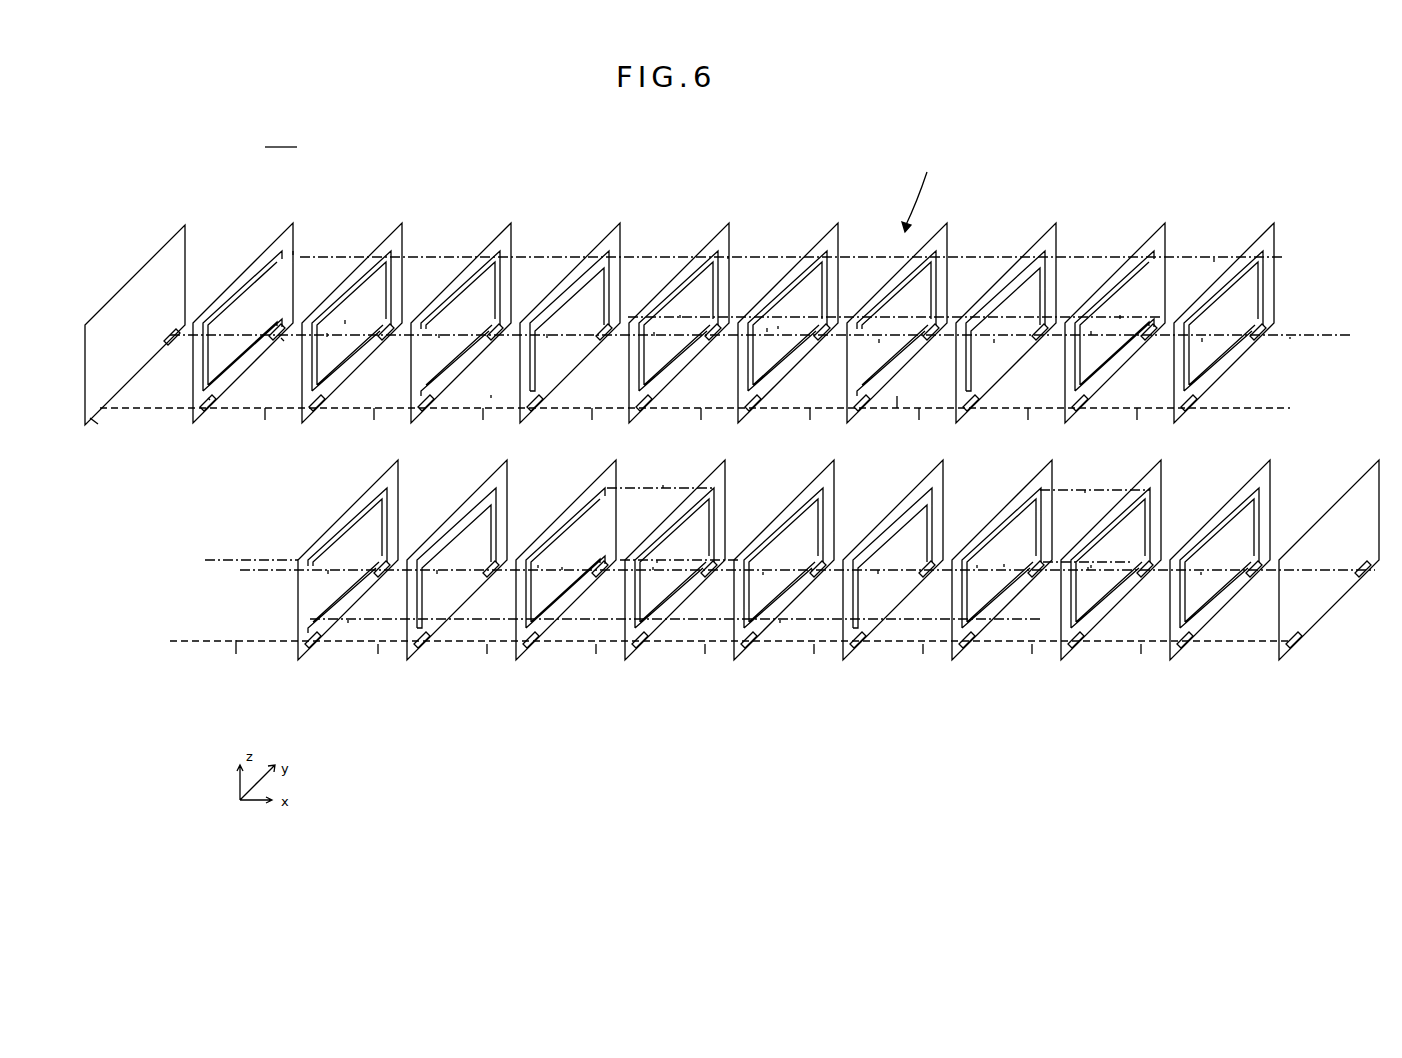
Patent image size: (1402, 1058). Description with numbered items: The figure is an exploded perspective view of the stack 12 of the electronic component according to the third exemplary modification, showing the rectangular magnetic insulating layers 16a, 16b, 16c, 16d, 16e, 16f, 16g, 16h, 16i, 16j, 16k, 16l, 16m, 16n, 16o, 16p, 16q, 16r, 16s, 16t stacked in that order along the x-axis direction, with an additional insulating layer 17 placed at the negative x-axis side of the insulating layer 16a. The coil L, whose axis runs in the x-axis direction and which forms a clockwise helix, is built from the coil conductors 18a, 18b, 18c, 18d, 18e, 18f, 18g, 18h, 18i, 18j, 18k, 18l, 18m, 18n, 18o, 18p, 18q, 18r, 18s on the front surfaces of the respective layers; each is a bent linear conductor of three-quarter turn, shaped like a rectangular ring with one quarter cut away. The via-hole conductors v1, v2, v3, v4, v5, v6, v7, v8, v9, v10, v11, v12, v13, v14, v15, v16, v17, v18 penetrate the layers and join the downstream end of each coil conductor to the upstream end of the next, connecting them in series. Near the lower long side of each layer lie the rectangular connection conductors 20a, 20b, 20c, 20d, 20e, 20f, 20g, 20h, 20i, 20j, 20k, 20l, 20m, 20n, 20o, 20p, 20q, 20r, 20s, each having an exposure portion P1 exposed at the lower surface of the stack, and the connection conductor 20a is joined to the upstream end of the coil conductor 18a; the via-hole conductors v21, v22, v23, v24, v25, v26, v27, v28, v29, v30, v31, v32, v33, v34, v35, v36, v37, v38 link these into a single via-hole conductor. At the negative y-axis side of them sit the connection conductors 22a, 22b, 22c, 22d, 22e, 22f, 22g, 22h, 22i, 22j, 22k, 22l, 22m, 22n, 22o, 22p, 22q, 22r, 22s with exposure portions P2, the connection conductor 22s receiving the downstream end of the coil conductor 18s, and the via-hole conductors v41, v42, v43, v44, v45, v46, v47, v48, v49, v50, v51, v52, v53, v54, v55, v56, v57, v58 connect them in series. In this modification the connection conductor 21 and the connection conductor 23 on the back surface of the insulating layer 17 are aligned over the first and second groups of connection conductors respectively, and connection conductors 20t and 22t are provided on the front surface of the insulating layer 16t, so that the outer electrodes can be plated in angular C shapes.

The stack 12 is at (281, 132).
The coil L is at (916, 189).
The insulating layer 17 is at (187, 224).
The connection conductor 21 is at (172, 348).
The connection conductor 23 is at (95, 412).
The exposure portion P1 is at (281, 338).
The exposure portion P2 is at (208, 398).
The insulating layer 16a is at (293, 223).
The insulating layer 16b is at (402, 223).
The insulating layer 16c is at (511, 223).
The insulating layer 16d is at (620, 223).
The insulating layer 16e is at (729, 223).
The insulating layer 16f is at (838, 223).
The insulating layer 16g is at (947, 223).
The insulating layer 16h is at (1056, 223).
The insulating layer 16i is at (1165, 223).
The insulating layer 16j is at (1274, 223).
The insulating layer 16k is at (298, 660).
The insulating layer 16l is at (407, 660).
The insulating layer 16m is at (516, 660).
The insulating layer 16n is at (625, 660).
The insulating layer 16o is at (734, 660).
The insulating layer 16p is at (843, 660).
The insulating layer 16q is at (952, 660).
The insulating layer 16r is at (1061, 660).
The insulating layer 16s is at (1170, 660).
The insulating layer 16t is at (1279, 660).
The coil conductor 18a is at (247, 280).
The coil conductor 18b is at (385, 292).
The coil conductor 18c is at (457, 286).
The coil conductor 18d is at (568, 292).
The coil conductor 18e is at (679, 286).
The coil conductor 18f is at (825, 277).
The coil conductor 18g is at (895, 286).
The coil conductor 18h is at (1005, 286).
The coil conductor 18i is at (1117, 292).
The coil conductor 18j is at (1262, 284).
The coil conductor 18k is at (352, 522).
The coil conductor 18l is at (461, 522).
The coil conductor 18m is at (570, 522).
The coil conductor 18n is at (681, 588).
The coil conductor 18o is at (788, 522).
The coil conductor 18p is at (897, 522).
The coil conductor 18q is at (1006, 522).
The coil conductor 18r is at (1117, 588).
The coil conductor 18s is at (1226, 588).
The connection conductor 20a is at (279, 344).
The connection conductor 20b is at (388, 344).
The connection conductor 20c is at (497, 344).
The connection conductor 20d is at (606, 344).
The connection conductor 20e is at (715, 344).
The connection conductor 20f is at (824, 344).
The connection conductor 20g is at (933, 344).
The connection conductor 20h is at (1042, 344).
The connection conductor 20i is at (1151, 344).
The connection conductor 20j is at (1260, 344).
The connection conductor 20k is at (384, 581).
The connection conductor 20l is at (493, 581).
The connection conductor 20m is at (602, 581).
The connection conductor 20n is at (711, 581).
The connection conductor 20o is at (820, 581).
The connection conductor 20p is at (929, 581).
The connection conductor 20q is at (1038, 581).
The connection conductor 20r is at (1147, 581).
The connection conductor 20s is at (1256, 581).
The connection conductor 20t is at (1365, 581).
The connection conductor 22a is at (203, 410).
The connection conductor 22b is at (312, 410).
The connection conductor 22c is at (421, 410).
The connection conductor 22d is at (530, 410).
The connection conductor 22e is at (639, 410).
The connection conductor 22f is at (748, 410).
The connection conductor 22g is at (857, 410).
The connection conductor 22h is at (966, 410).
The connection conductor 22i is at (1075, 410).
The connection conductor 22j is at (1184, 410).
The connection conductor 22k is at (316, 650).
The connection conductor 22l is at (425, 650).
The connection conductor 22m is at (534, 650).
The connection conductor 22n is at (643, 650).
The connection conductor 22o is at (752, 650).
The connection conductor 22p is at (861, 650).
The connection conductor 22q is at (970, 650).
The connection conductor 22r is at (1079, 650).
The connection conductor 22s is at (1188, 650).
The connection conductor 22t is at (1297, 650).
The via-hole conductor v1 is at (294, 252).
The via-hole conductor v2 is at (345, 322).
The via-hole conductor v3 is at (491, 398).
The via-hole conductor v4 is at (680, 315).
The via-hole conductor v5 is at (728, 256).
The via-hole conductor v6 is at (778, 326).
The via-hole conductor v7 is at (900, 419).
The via-hole conductor v8 is at (1120, 317).
The via-hole conductor v9 is at (1214, 262).
The via-hole conductor v10 is at (1290, 337).
The via-hole conductor v11 is at (348, 620).
The via-hole conductor v12 is at (538, 565).
The via-hole conductor v13 is at (663, 485).
The via-hole conductor v14 is at (657, 560).
The via-hole conductor v15 is at (780, 620).
The via-hole conductor v16 is at (977, 565).
The via-hole conductor v17 is at (1085, 490).
The via-hole conductor v18 is at (1091, 565).
The via-hole conductor v21 is at (327, 335).
The via-hole conductor v22 is at (439, 334).
The via-hole conductor v23 is at (547, 334).
The via-hole conductor v24 is at (654, 332).
The via-hole conductor v25 is at (767, 328).
The via-hole conductor v26 is at (879, 339).
The via-hole conductor v27 is at (994, 339).
The via-hole conductor v28 is at (1091, 333).
The via-hole conductor v29 is at (1202, 338).
The via-hole conductor v30 is at (328, 570).
The via-hole conductor v31 is at (437, 570).
The via-hole conductor v32 is at (562, 567).
The via-hole conductor v33 is at (653, 567).
The via-hole conductor v34 is at (763, 572).
The via-hole conductor v35 is at (878, 570).
The via-hole conductor v36 is at (1004, 564).
The via-hole conductor v37 is at (1088, 567).
The via-hole conductor v38 is at (1201, 572).
The via-hole conductor v41 is at (268, 430).
The via-hole conductor v42 is at (377, 430).
The via-hole conductor v43 is at (487, 430).
The via-hole conductor v44 is at (596, 430).
The via-hole conductor v45 is at (704, 430).
The via-hole conductor v46 is at (814, 430).
The via-hole conductor v47 is at (923, 430).
The via-hole conductor v48 is at (1032, 430).
The via-hole conductor v49 is at (1141, 430).
The via-hole conductor v50 is at (235, 667).
The via-hole conductor v51 is at (379, 664).
The via-hole conductor v52 is at (488, 664).
The via-hole conductor v53 is at (598, 664).
The via-hole conductor v54 is at (707, 664).
The via-hole conductor v55 is at (815, 664).
The via-hole conductor v56 is at (925, 664).
The via-hole conductor v57 is at (1034, 664).
The via-hole conductor v58 is at (1143, 664).